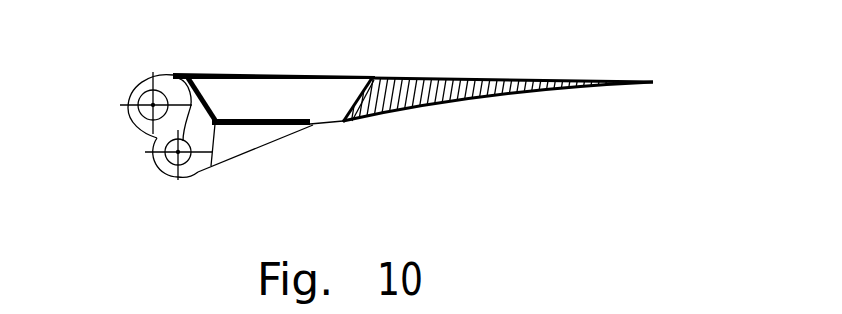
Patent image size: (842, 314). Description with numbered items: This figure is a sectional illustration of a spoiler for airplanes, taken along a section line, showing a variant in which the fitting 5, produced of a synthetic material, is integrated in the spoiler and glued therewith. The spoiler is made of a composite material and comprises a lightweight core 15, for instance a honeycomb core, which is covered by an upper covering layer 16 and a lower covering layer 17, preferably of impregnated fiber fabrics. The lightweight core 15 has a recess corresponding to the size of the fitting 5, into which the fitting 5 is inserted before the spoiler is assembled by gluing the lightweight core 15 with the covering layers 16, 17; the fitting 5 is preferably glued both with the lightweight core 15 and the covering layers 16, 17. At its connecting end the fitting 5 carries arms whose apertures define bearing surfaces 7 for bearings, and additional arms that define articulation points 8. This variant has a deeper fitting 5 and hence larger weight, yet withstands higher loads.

The fitting 5 is at (233, 138).
The bearing surface 7 is at (140, 109).
The articulation point 8 is at (178, 152).
The lightweight core 15 is at (457, 92).
The upper covering layer 16 is at (422, 77).
The lower covering layer 17 is at (407, 113).